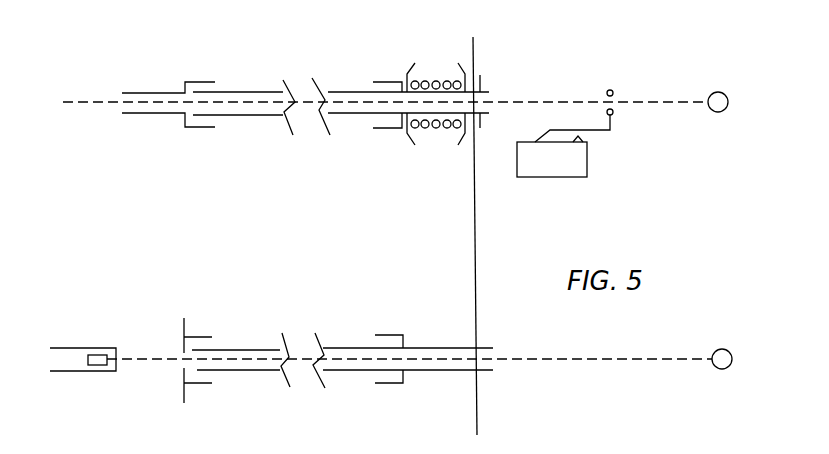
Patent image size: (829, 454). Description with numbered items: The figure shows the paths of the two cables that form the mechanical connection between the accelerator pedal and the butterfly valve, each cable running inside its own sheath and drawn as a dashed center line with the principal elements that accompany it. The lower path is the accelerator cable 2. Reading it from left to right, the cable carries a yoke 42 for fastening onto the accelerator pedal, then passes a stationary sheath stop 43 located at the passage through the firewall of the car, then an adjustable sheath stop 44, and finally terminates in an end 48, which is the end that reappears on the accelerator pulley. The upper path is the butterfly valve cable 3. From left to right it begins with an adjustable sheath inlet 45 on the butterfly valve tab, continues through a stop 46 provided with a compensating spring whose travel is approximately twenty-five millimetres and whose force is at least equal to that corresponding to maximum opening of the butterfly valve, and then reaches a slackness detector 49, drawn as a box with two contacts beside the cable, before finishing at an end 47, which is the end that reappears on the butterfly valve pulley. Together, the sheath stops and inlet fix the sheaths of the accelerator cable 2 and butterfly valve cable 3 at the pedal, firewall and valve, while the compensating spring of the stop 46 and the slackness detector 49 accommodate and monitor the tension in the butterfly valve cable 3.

The accelerator cable 2 is at (157, 362).
The butterfly valve cable 3 is at (503, 102).
The yoke 42 is at (82, 345).
The stationary sheath stop 43 is at (189, 333).
The adjustable sheath stop 44 is at (428, 348).
The adjustable sheath inlet 45 is at (138, 93).
The stop with compensating spring 46 is at (434, 78).
The end 47 is at (718, 112).
The end 48 is at (719, 349).
The slackness detector 49 is at (575, 162).